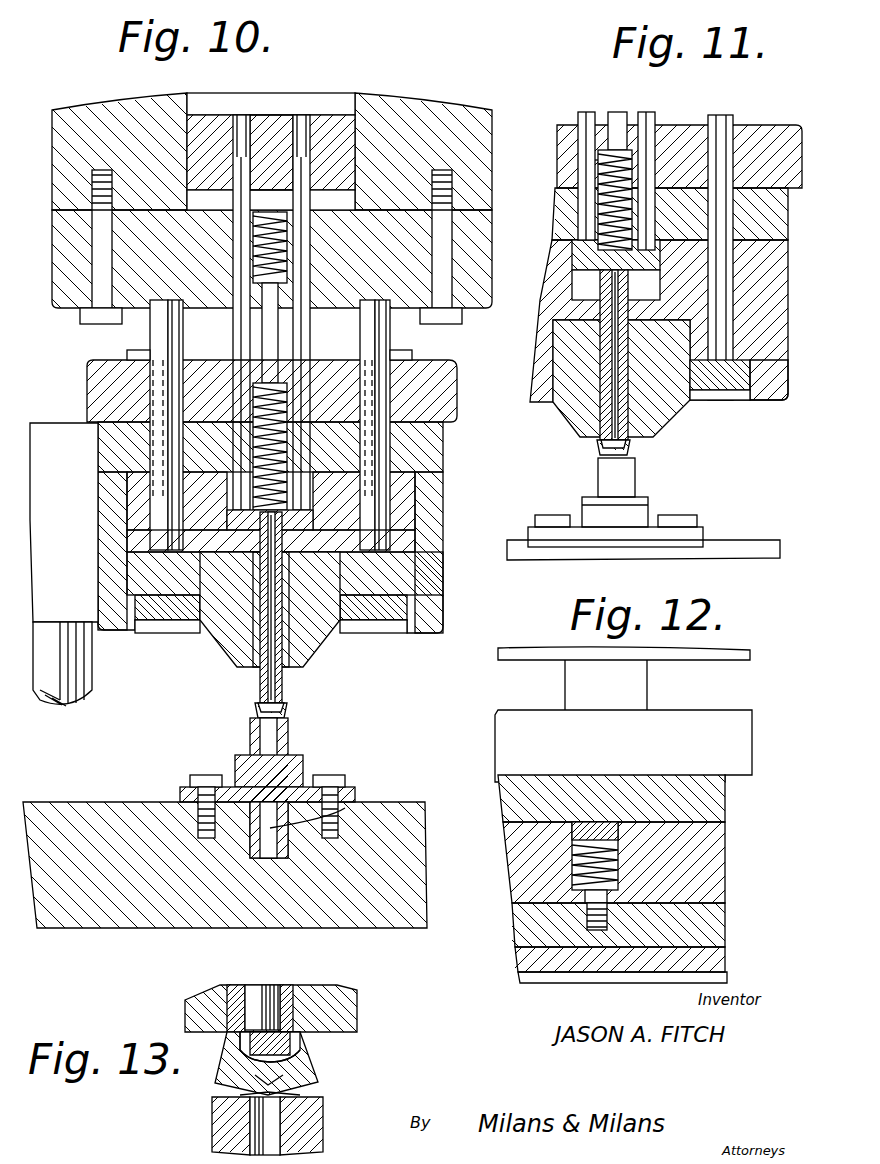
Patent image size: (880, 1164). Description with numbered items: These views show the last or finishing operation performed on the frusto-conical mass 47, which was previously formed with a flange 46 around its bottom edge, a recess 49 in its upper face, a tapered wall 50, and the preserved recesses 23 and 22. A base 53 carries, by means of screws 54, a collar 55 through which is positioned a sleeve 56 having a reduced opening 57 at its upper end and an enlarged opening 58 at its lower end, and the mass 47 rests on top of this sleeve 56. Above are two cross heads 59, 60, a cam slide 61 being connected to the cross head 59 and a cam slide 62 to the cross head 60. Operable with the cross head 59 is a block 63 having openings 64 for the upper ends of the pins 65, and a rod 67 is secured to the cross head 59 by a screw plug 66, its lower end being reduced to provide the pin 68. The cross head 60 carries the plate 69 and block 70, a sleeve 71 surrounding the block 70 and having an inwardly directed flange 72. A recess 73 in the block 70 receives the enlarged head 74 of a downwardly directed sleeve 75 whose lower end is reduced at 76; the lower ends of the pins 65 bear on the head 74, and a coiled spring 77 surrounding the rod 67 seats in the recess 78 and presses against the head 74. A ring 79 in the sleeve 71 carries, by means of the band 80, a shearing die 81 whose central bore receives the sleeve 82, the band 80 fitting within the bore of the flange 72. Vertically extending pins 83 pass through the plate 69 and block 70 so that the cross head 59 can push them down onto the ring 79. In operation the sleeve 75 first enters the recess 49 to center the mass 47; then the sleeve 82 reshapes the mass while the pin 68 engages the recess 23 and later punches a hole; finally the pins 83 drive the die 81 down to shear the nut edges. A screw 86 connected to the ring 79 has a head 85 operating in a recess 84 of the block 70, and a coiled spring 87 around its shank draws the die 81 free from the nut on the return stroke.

In FIG. 13, the recess 22 is at (300, 1094).
In FIG. 13, the recess 23 is at (280, 1080).
In FIG. 13, the flange 46 is at (222, 1080).
In FIG. 10, the mass 47 is at (285, 712).
In FIG. 11, the mass 47 is at (636, 455).
In FIG. 13, the mass 47 is at (305, 1064).
In FIG. 13, the recess 49 is at (300, 1045).
In FIG. 13, the tapered wall 50 is at (226, 1056).
In FIG. 10, the base 53 is at (425, 842).
In FIG. 11, the base 53 is at (752, 546).
In FIG. 10, the screws 54 is at (207, 775).
In FIG. 11, the screws 54 is at (558, 506).
In FIG. 10, the collar 55 is at (300, 785).
In FIG. 11, the collar 55 is at (645, 512).
In FIG. 10, the sleeve 56 is at (300, 760).
In FIG. 11, the sleeve 56 is at (640, 492).
In FIG. 13, the sleeve 56 is at (220, 1120).
In FIG. 10, the reduced opening 57 is at (290, 727).
In FIG. 13, the reduced opening 57 is at (282, 1120).
In FIG. 10, the enlarged opening 58 is at (345, 808).
In FIG. 10, the cross head 59 is at (485, 252).
In FIG. 11, the cross head 59 is at (538, 232).
In FIG. 10, the cross head 60 is at (450, 380).
In FIG. 11, the cross head 60 is at (750, 128).
In FIG. 12, the cross head 60 is at (742, 745).
In FIG. 10, the cam slide 61 is at (395, 108).
In FIG. 10, the cam slide 62 is at (283, 94).
In FIG. 10, the block 63 is at (207, 118).
In FIG. 10, the openings 64 is at (305, 122).
In FIG. 10, the pins 65 is at (250, 325).
In FIG. 11, the pins 65 is at (647, 112).
In FIG. 10, the screw plug 66 is at (255, 282).
In FIG. 10, the rod 67 is at (268, 340).
In FIG. 11, the rod 67 is at (617, 112).
In FIG. 10, the pin 68 is at (268, 660).
In FIG. 11, the pin 68 is at (625, 425).
In FIG. 13, the pin 68 is at (275, 995).
In FIG. 10, the plate 69 is at (430, 452).
In FIG. 11, the plate 69 is at (685, 192).
In FIG. 12, the plate 69 is at (725, 805).
In FIG. 10, the block 70 is at (420, 520).
In FIG. 10, the sleeve 71 is at (445, 580).
In FIG. 10, the flange 72 is at (402, 634).
In FIG. 11, the flange 72 is at (745, 405).
In FIG. 10, the recess 73 is at (313, 497).
In FIG. 10, the enlarged head 74 is at (240, 520).
In FIG. 11, the enlarged head 74 is at (580, 262).
In FIG. 10, the sleeve 75 is at (262, 690).
In FIG. 11, the sleeve 75 is at (600, 410).
In FIG. 13, the sleeve 75 is at (240, 988).
In FIG. 10, the reduced end 76 is at (255, 710).
In FIG. 11, the reduced end 76 is at (630, 445).
In FIG. 13, the reduced end 76 is at (300, 1040).
In FIG. 10, the coiled spring 77 is at (247, 443).
In FIG. 11, the coiled spring 77 is at (600, 175).
In FIG. 10, the recess 78 is at (300, 395).
In FIG. 11, the recess 78 is at (600, 195).
In FIG. 10, the ring 79 is at (440, 597).
In FIG. 11, the ring 79 is at (790, 385).
In FIG. 12, the ring 79 is at (725, 940).
In FIG. 10, the band 80 is at (140, 633).
In FIG. 11, the band 80 is at (727, 382).
In FIG. 12, the band 80 is at (727, 975).
In FIG. 10, the shearing die 81 is at (225, 615).
In FIG. 11, the shearing die 81 is at (662, 412).
In FIG. 13, the shearing die 81 is at (358, 1012).
In FIG. 10, the sleeve 82 is at (265, 612).
In FIG. 13, the sleeve 82 is at (282, 995).
In FIG. 10, the pins 83 is at (155, 318).
In FIG. 11, the pins 83 is at (735, 118).
In FIG. 12, the recess 84 is at (578, 870).
In FIG. 12, the head 85 is at (592, 828).
In FIG. 12, the screw 86 is at (590, 920).
In FIG. 12, the coiled spring 87 is at (585, 896).